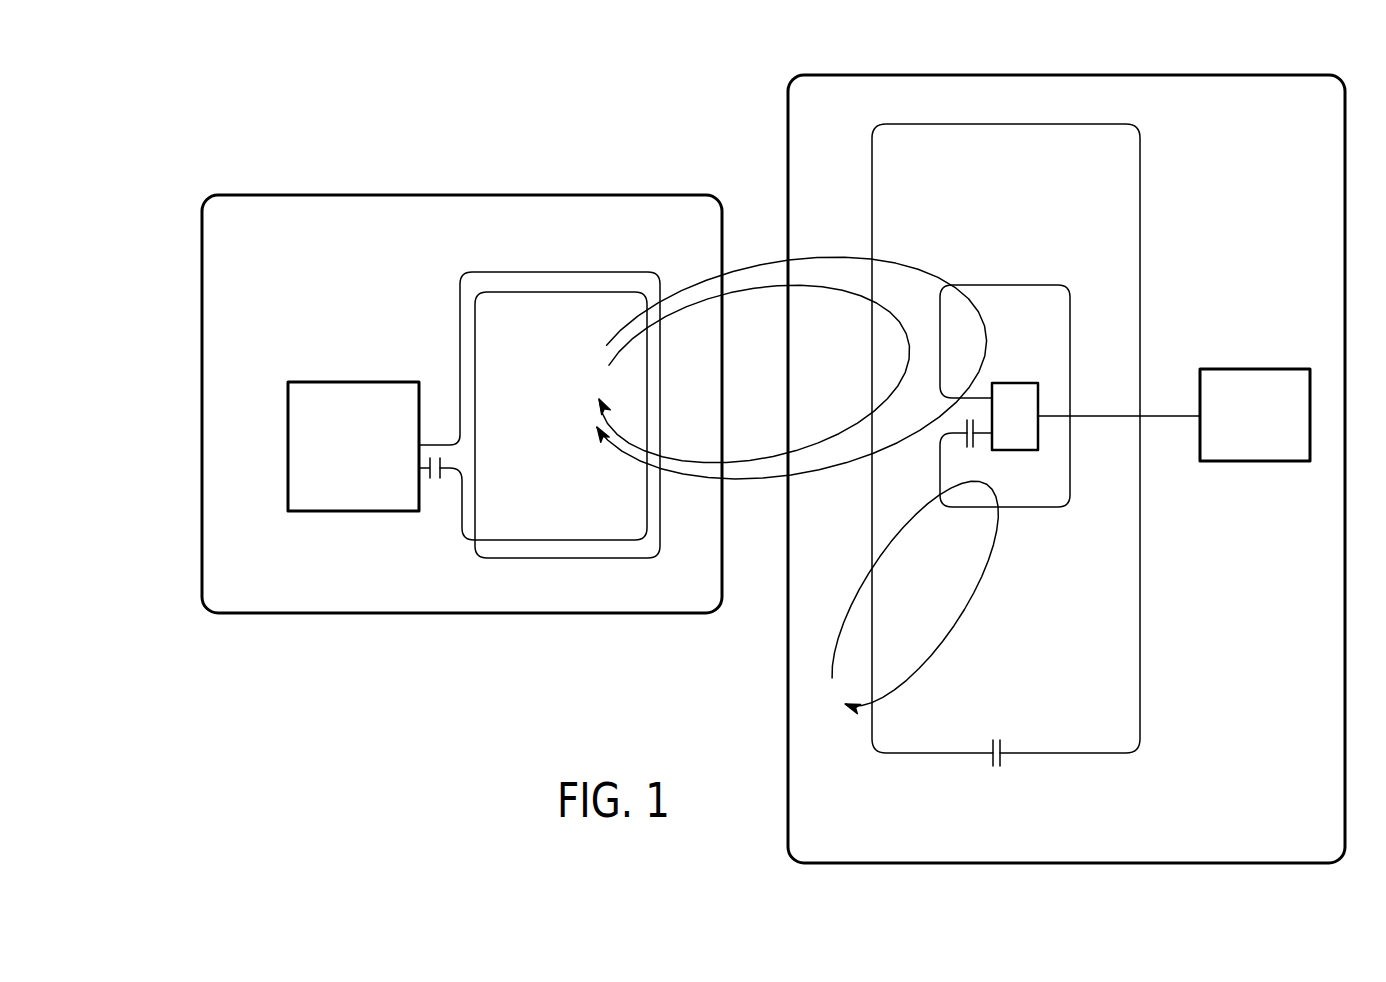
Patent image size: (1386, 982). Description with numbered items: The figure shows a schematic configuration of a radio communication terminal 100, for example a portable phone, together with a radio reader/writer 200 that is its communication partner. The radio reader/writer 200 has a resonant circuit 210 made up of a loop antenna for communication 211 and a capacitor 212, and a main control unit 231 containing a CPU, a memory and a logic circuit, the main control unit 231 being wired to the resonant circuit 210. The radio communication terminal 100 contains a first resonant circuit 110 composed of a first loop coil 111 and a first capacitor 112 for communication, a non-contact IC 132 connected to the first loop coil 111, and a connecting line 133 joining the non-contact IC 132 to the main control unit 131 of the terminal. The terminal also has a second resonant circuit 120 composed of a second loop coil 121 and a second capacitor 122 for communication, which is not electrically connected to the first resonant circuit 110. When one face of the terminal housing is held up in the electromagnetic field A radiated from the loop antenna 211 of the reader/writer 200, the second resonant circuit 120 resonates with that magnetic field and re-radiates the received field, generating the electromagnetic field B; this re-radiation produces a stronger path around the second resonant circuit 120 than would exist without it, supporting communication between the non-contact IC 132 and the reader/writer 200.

The radio communication terminal 100 is at (1238, 61).
The first resonant circuit 110 is at (990, 277).
The first loop coil 111 is at (1037, 285).
The first capacitor 112 is at (970, 448).
The second resonant circuit 120 is at (942, 762).
The second loop coil 121 is at (896, 754).
The second capacitor 122 is at (997, 768).
The main control unit 131 is at (1255, 369).
The non-contact IC 132 is at (1018, 383).
The connecting line 133 is at (1172, 416).
The radio reader/writer 200 is at (245, 173).
The resonant circuit 210 is at (537, 266).
The loop antenna for communication 211 is at (586, 272).
The capacitor 212 is at (435, 482).
The main control unit 231 is at (352, 382).
The electromagnetic field A is at (765, 288).
The electromagnetic field B is at (840, 632).